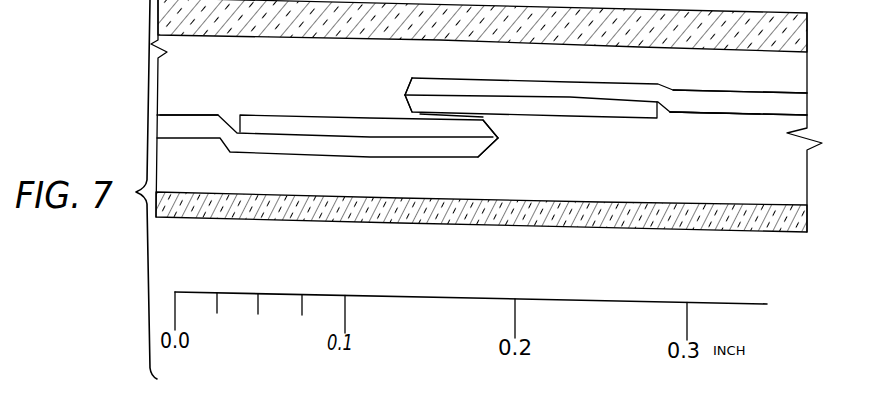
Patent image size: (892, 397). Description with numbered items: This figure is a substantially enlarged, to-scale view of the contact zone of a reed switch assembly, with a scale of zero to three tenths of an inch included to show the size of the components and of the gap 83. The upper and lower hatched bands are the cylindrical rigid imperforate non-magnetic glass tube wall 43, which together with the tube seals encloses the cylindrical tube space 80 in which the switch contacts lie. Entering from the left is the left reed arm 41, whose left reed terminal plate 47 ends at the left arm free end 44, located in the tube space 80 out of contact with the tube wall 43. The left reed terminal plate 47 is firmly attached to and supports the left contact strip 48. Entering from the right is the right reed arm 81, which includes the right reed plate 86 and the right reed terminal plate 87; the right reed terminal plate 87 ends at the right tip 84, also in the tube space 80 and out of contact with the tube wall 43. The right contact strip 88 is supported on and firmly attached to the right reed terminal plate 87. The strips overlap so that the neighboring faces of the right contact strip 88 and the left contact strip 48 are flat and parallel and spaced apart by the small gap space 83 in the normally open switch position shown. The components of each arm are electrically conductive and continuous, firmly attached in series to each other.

The left reed arm 41 is at (197, 107).
The tube wall 43 is at (487, 225).
The left arm free end 44 is at (497, 140).
The left reed terminal plate 47 is at (352, 145).
The left contact strip 48 is at (320, 118).
The tube space 80 is at (632, 182).
The right reed arm 81 is at (693, 118).
The gap space 83 is at (482, 119).
The right tip 84 is at (405, 93).
The right reed plate 86 is at (700, 98).
The right reed terminal plate 87 is at (558, 83).
The right contact strip 88 is at (580, 110).